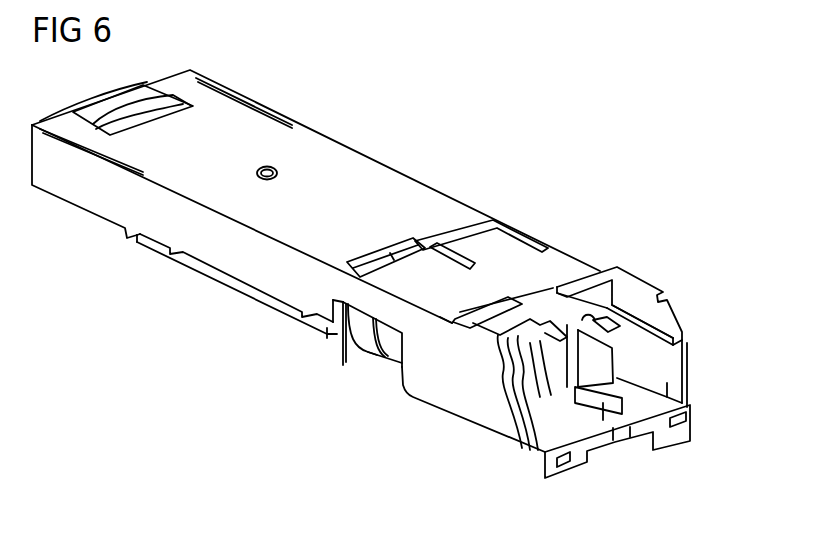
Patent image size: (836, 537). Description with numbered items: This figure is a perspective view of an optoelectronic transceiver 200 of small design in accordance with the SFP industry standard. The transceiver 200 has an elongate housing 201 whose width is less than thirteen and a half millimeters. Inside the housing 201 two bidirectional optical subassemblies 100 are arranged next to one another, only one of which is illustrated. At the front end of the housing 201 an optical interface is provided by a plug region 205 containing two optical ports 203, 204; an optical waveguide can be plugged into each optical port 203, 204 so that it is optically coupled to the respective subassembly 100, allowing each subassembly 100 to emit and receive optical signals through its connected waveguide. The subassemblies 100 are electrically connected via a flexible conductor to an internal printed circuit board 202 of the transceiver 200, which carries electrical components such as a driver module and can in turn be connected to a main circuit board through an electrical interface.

The optoelectronic transceiver 200 is at (466, 141).
The housing 201 is at (313, 143).
The printed circuit board 202 is at (218, 280).
The bidirectional optical subassembly 100 is at (379, 365).
The plug region 205 is at (655, 274).
The optical port 203 is at (660, 370).
The optical port 204 is at (567, 417).